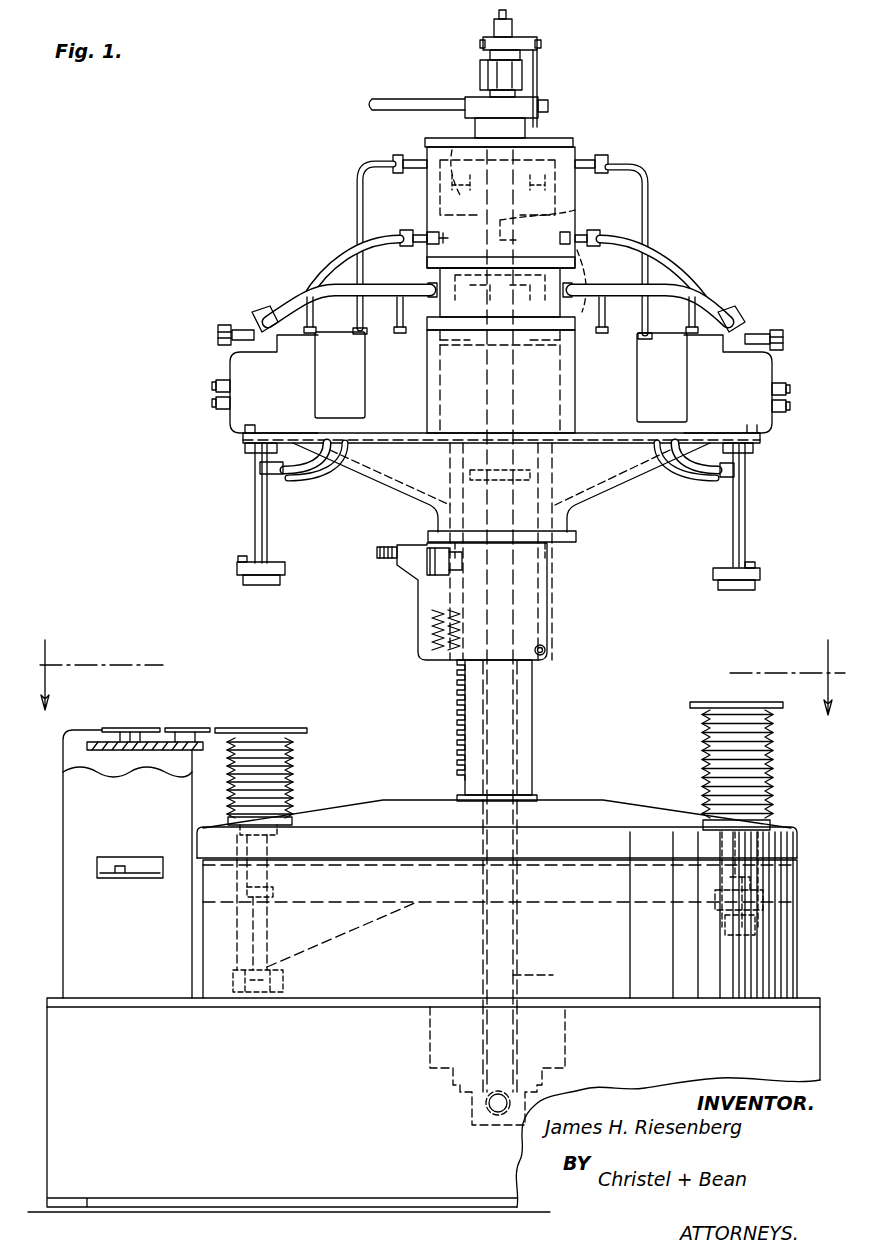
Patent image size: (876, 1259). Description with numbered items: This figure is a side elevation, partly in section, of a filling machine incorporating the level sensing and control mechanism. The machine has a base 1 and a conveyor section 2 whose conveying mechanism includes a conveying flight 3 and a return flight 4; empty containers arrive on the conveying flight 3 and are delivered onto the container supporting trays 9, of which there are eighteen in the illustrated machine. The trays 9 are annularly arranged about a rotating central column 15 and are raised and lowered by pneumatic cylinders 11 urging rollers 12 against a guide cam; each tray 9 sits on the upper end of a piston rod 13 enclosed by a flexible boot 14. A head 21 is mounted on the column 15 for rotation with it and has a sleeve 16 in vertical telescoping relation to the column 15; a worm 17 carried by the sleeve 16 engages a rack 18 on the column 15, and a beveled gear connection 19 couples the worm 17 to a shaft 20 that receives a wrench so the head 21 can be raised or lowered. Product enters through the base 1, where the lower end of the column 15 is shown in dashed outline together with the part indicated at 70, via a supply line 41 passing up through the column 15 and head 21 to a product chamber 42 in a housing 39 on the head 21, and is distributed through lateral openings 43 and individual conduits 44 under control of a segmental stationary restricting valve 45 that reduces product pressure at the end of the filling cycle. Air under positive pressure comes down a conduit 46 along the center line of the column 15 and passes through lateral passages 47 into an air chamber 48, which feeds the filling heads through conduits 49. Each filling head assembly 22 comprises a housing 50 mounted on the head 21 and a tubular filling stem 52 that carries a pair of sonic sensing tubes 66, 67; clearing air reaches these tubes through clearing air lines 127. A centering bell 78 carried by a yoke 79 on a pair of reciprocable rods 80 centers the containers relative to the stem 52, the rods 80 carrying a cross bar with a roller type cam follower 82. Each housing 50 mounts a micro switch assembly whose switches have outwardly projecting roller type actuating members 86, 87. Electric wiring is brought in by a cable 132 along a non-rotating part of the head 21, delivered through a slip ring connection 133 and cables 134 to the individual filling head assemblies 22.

The base 1 is at (40, 986).
The conveyor section 2 is at (48, 800).
The conveying flight 3 is at (130, 728).
The return flight 4 is at (110, 878).
The container supporting trays 9 is at (264, 726).
The pneumatic cylinders 11 is at (272, 870).
The rollers 12 is at (255, 992).
The piston rods 13 is at (273, 905).
The flexible boots 14 is at (293, 768).
The rotating central column 15 is at (534, 718).
The sleeve 16 is at (548, 592).
The worm 17 is at (425, 640).
The rack 18 is at (457, 694).
The beveled gear connection 19 is at (430, 572).
The shaft 20 is at (388, 547).
The head 21 is at (598, 508).
The filling head assemblies 22 is at (225, 418).
The housing 39 is at (427, 210).
The product supply line 41 is at (553, 975).
The product chamber 42 is at (520, 381).
The lateral openings 43 is at (440, 305).
The conduits 44 is at (405, 270).
The restricting valve 45 is at (440, 338).
The conduit 46 is at (508, 14).
The lateral passages 47 is at (580, 212).
The air chamber 48 is at (585, 315).
The conduits 49 is at (358, 246).
The housing 50 is at (240, 360).
The tubular filling stem 52 is at (268, 522).
The sonic sensing tube 66 is at (665, 476).
The sonic sensing tube 67 is at (705, 482).
The lower bearing 70 is at (475, 1105).
The centering bell 78 is at (262, 585).
The yoke 79 is at (285, 568).
The rods 80 is at (255, 518).
The cam follower 82 is at (224, 325).
The actuating member 86 is at (792, 389).
The actuating member 87 is at (792, 406).
The clearing air lines 127 is at (290, 478).
The cable 132 is at (445, 100).
The slip ring connection 133 is at (452, 150).
The cables 134 is at (376, 165).